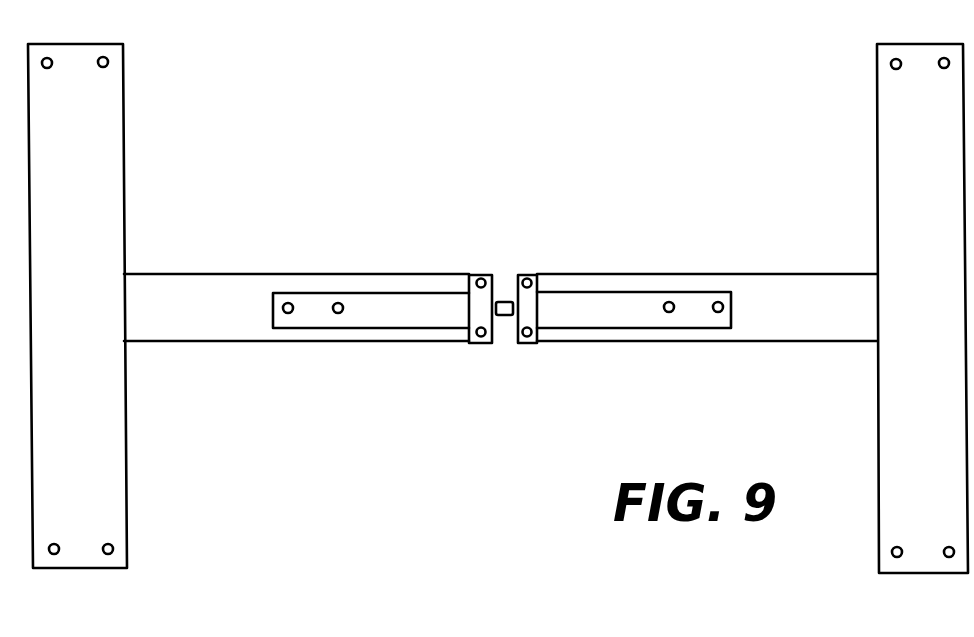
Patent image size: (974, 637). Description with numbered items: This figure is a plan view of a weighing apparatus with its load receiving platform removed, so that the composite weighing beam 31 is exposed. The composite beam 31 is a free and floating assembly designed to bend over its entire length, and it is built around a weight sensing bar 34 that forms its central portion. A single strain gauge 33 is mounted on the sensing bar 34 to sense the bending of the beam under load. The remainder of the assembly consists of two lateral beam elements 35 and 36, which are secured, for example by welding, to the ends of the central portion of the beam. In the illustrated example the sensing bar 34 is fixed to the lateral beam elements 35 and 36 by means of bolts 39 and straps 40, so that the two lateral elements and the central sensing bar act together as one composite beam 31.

The composite weighing beam 31 is at (186, 300).
The strain gauge 33 is at (510, 316).
The weight sensing bar 34 is at (623, 305).
The lateral beam element 35 is at (103, 140).
The lateral beam element 36 is at (897, 113).
The bolts 39 is at (290, 302).
The straps 40 is at (483, 307).